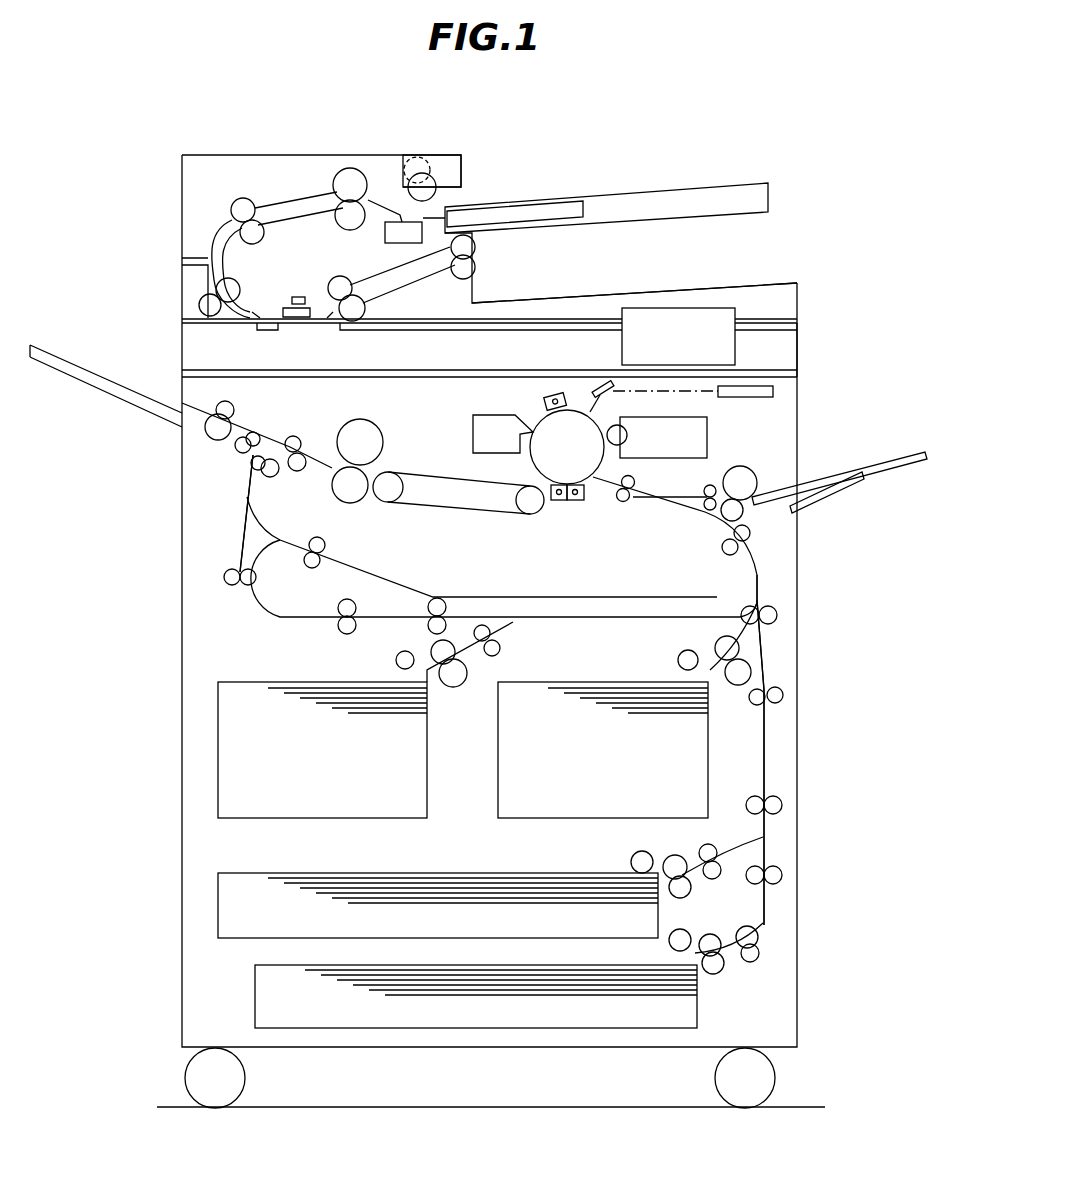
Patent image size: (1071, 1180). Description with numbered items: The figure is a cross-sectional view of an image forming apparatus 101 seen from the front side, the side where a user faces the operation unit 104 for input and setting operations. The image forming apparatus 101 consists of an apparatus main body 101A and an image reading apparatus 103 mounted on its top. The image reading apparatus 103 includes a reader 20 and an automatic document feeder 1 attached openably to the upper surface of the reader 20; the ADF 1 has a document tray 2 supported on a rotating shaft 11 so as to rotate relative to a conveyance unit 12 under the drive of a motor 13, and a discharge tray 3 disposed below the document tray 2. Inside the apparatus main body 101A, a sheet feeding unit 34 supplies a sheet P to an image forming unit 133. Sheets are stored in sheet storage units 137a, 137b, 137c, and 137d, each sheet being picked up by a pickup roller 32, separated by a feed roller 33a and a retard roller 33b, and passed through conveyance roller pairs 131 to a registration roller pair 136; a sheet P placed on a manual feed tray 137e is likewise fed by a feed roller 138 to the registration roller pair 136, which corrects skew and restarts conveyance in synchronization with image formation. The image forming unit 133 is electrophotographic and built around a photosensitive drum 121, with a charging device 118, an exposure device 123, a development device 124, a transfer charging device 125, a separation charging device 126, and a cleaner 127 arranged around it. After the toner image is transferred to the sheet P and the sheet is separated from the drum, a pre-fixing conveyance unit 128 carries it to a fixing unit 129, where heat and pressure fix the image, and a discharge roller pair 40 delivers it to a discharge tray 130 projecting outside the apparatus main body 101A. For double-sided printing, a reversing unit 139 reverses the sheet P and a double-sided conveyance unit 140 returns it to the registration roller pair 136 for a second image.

The automatic document feeder 1 is at (766, 158).
The document tray 2 is at (620, 194).
The discharge tray 3 is at (762, 300).
The rotating shaft 11 is at (583, 211).
The conveyance unit 12 is at (232, 253).
The motor 13 is at (405, 222).
The reader 20 is at (797, 356).
The pickup roller 32 is at (396, 660).
The feed roller 33a is at (432, 650).
The retard roller 33b is at (753, 673).
The sheet feeding unit 34 is at (770, 587).
The discharge roller pair 40 is at (212, 432).
The image forming apparatus 101 is at (895, 430).
The apparatus main body 101A is at (896, 663).
The image reading apparatus 103 is at (462, 168).
The operation unit 104 is at (690, 308).
The charging device 118 is at (553, 393).
The photosensitive drum 121 is at (545, 420).
The exposure device 123 is at (748, 393).
The development device 124 is at (707, 437).
The transfer charging device 125 is at (578, 500).
The separation charging device 126 is at (558, 500).
The cleaner 127 is at (473, 435).
The pre-fixing conveyance unit 128 is at (457, 493).
The fixing unit 129 is at (345, 430).
The discharge tray 130 is at (110, 395).
The conveyance roller pair 131 is at (777, 615).
The image forming unit 133 is at (524, 473).
The registration roller pair 136 is at (630, 497).
The sheet storage unit 137a is at (255, 995).
The sheet storage unit 137b is at (218, 905).
The sheet storage unit 137c is at (218, 748).
The sheet storage unit 137d is at (708, 762).
The manual feed tray 137e is at (890, 465).
The feed roller 138 is at (758, 478).
The reversing unit 139 is at (355, 568).
The double-sided conveyance unit 140 is at (240, 606).
The sheet P is at (585, 685).